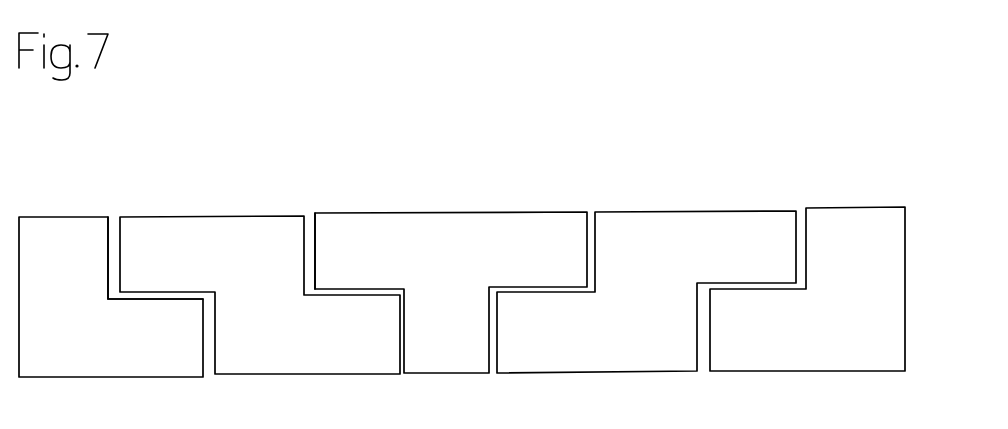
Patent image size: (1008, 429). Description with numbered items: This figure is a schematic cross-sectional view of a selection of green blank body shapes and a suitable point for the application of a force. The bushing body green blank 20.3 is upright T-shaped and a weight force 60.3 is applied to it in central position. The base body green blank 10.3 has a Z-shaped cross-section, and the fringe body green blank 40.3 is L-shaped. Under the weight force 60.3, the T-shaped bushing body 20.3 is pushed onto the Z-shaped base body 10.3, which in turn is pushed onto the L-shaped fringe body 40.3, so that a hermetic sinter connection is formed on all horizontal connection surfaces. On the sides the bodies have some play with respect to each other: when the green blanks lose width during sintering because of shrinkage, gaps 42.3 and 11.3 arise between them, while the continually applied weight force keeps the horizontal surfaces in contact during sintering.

The base body green blank 10.3 is at (458, 222).
The gap 11.3 is at (293, 155).
The bushing body green blank 20.3 is at (451, 222).
The fringe body green blank 40.3 is at (462, 230).
The gap 42.3 is at (155, 212).
The weight force 60.3 is at (462, 199).